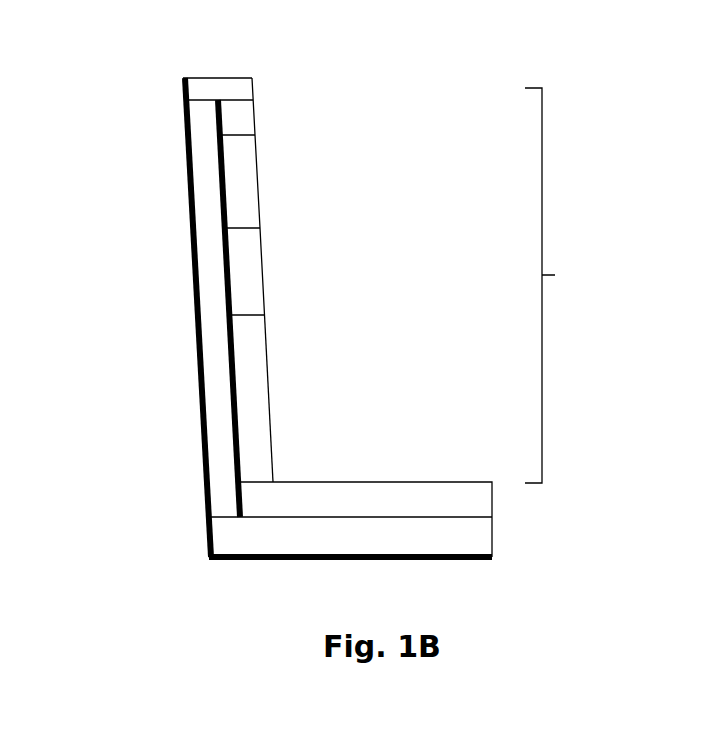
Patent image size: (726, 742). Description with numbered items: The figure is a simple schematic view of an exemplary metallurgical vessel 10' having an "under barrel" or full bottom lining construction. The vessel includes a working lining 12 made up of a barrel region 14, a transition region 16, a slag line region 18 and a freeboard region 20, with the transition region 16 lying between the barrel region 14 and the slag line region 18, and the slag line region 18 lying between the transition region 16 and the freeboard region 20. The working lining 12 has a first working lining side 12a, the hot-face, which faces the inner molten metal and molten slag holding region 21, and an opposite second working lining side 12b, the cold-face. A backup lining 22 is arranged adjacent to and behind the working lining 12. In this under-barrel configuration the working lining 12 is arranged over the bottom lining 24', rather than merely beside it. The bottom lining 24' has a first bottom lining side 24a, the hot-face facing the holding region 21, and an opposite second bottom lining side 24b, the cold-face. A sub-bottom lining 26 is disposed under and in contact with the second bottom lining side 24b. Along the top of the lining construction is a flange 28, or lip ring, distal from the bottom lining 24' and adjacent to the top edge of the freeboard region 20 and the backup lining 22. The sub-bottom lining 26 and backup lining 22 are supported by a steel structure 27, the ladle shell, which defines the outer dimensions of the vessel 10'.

The metallurgical vessel 10' is at (75, 21).
The working lining 12 is at (569, 285).
The first working lining side 12a is at (293, 328).
The second working lining side 12b is at (209, 180).
The barrel region 14 is at (262, 422).
The transition region 16 is at (262, 247).
The slag line region 18 is at (250, 157).
The freeboard region 20 is at (248, 118).
The inner molten metal and molten slag holding region 21 is at (490, 80).
The backup lining 22 is at (215, 218).
The bottom lining 24' is at (365, 481).
The first bottom lining side 24a is at (452, 468).
The second bottom lining side 24b is at (484, 545).
The sub-bottom lining 26 is at (247, 547).
The steel structure 27 is at (200, 370).
The flange 28 is at (212, 80).